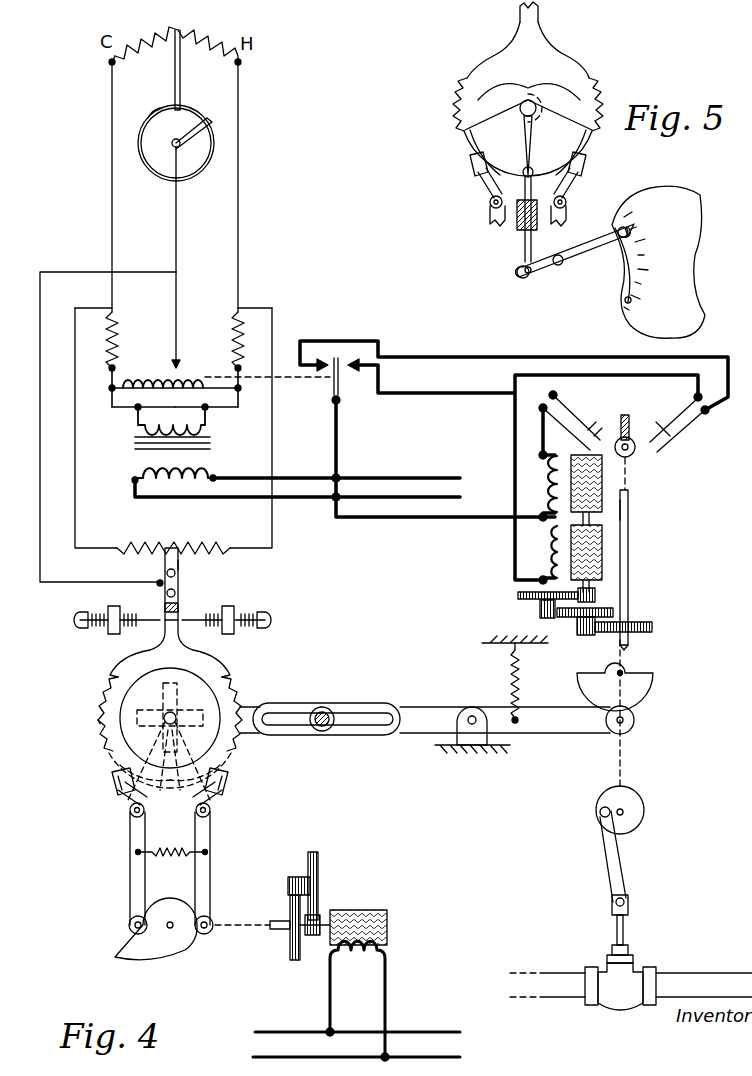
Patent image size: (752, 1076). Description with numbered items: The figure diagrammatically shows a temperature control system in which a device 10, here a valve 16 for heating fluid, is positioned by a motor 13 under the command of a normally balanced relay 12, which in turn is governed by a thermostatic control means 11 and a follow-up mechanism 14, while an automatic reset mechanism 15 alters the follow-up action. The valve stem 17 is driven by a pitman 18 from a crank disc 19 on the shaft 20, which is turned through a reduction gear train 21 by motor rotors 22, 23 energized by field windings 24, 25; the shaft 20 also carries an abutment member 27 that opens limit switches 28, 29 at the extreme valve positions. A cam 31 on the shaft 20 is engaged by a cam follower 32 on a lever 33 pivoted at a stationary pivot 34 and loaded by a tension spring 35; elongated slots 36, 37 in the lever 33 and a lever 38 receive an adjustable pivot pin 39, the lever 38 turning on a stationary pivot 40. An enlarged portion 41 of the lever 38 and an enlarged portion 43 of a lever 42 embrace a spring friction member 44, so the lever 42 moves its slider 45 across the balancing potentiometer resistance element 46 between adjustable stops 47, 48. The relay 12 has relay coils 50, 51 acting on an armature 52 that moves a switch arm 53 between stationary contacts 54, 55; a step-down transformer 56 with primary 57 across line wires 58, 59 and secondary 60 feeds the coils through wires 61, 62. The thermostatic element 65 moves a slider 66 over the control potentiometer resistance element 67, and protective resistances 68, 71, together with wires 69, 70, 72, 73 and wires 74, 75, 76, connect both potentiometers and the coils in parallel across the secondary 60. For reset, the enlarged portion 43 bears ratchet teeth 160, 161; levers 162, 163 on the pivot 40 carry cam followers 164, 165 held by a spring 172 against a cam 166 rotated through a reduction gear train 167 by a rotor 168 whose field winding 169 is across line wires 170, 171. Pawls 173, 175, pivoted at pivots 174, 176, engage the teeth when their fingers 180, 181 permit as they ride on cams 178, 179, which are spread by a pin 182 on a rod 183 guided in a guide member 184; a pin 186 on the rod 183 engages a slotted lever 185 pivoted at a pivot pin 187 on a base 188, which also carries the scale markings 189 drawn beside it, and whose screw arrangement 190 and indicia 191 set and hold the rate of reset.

In FIG. 4, the device to be positioned 10 is at (645, 955).
In FIG. 4, the control means 11 is at (248, 105).
In FIG. 4, the normally balanced relay 12 is at (290, 323).
In FIG. 4, the motor 13 is at (642, 524).
In FIG. 4, the follow-up mechanism 14 is at (225, 569).
In FIG. 4, the automatic reset mechanism 15 is at (75, 728).
In FIG. 4, the valve 16 is at (615, 975).
In FIG. 4, the valve stem 17 is at (616, 926).
In FIG. 4, the pitman 18 is at (610, 865).
In FIG. 4, the crank disc 19 is at (645, 808).
In FIG. 4, the shaft 20 is at (630, 579).
In FIG. 4, the reduction gear train 21 is at (585, 636).
In FIG. 4, the motor rotor 22 is at (605, 558).
In FIG. 4, the motor rotor 23 is at (605, 475).
In FIG. 4, the field winding 24 is at (550, 565).
In FIG. 4, the field winding 25 is at (550, 495).
In FIG. 4, the abutment member 27 is at (632, 420).
In FIG. 4, the limit switch 28 is at (586, 436).
In FIG. 4, the limit switch 29 is at (672, 444).
In FIG. 4, the cam 31 is at (652, 680).
In FIG. 4, the cam follower 32 is at (635, 720).
In FIG. 4, the lever 33 is at (555, 736).
In FIG. 4, the stationary pivot 34 is at (468, 710).
In FIG. 4, the tension spring 35 is at (520, 672).
In FIG. 4, the elongated slot 36 is at (375, 703).
In FIG. 4, the elongated slot 37 is at (290, 727).
In FIG. 4, the lever 38 is at (262, 703).
In FIG. 4, the pivot pin 39 is at (325, 706).
In FIG. 4, the stationary pivot 40 is at (178, 712).
In FIG. 5, the stationary pivot 40 is at (533, 98).
In FIG. 4, the enlarged portion 41 is at (212, 660).
In FIG. 4, the lever 42 is at (163, 632).
In FIG. 5, the lever 42 is at (518, 22).
In FIG. 4, the enlarged portion 43 is at (120, 658).
In FIG. 5, the enlarged portion 43 is at (488, 52).
In FIG. 4, the spring friction member 44 is at (100, 684).
In FIG. 4, the slider 45 is at (163, 562).
In FIG. 4, the balancing potentiometer resistance element 46 is at (185, 545).
In FIG. 4, the adjustable stop 47 is at (128, 615).
In FIG. 4, the adjustable stop 48 is at (214, 612).
In FIG. 4, the relay coil 50 is at (138, 368).
In FIG. 4, the relay coil 51 is at (190, 368).
In FIG. 4, the armature 52 is at (180, 388).
In FIG. 4, the switch arm 53 is at (333, 402).
In FIG. 4, the stationary contact 54 is at (314, 378).
In FIG. 4, the stationary contact 55 is at (350, 372).
In FIG. 4, the step-down transformer 56 is at (130, 443).
In FIG. 4, the primary 57 is at (178, 478).
In FIG. 4, the line wire 58 is at (297, 475).
In FIG. 4, the line wire 59 is at (300, 499).
In FIG. 4, the secondary 60 is at (166, 412).
In FIG. 4, the wire 61 is at (112, 408).
In FIG. 4, the wire 62 is at (225, 410).
In FIG. 4, the thermostatic element 65 is at (160, 175).
In FIG. 4, the slider 66 is at (182, 85).
In FIG. 4, the control potentiometer resistance element 67 is at (160, 46).
In FIG. 4, the protective resistance 68 is at (116, 322).
In FIG. 4, the wire 69 is at (114, 233).
In FIG. 4, the wire 70 is at (78, 520).
In FIG. 4, the protective resistance 71 is at (234, 326).
In FIG. 4, the wire 72 is at (240, 227).
In FIG. 4, the wire 73 is at (270, 457).
In FIG. 4, the wire 74 is at (178, 302).
In FIG. 4, the wire 75 is at (178, 226).
In FIG. 4, the wire 76 is at (42, 470).
In FIG. 4, the ratchet teeth 160 is at (100, 706).
In FIG. 5, the ratchet teeth 160 is at (456, 84).
In FIG. 4, the ratchet teeth 161 is at (245, 700).
In FIG. 5, the ratchet teeth 161 is at (604, 86).
In FIG. 4, the lever 162 is at (130, 838).
In FIG. 5, the lever 162 is at (490, 218).
In FIG. 4, the lever 163 is at (212, 830).
In FIG. 5, the lever 163 is at (566, 214).
In FIG. 4, the cam follower 164 is at (128, 926).
In FIG. 4, the cam follower 165 is at (214, 920).
In FIG. 4, the cam 166 is at (175, 955).
In FIG. 4, the reduction gear train 167 is at (290, 884).
In FIG. 4, the rotor 168 is at (360, 910).
In FIG. 4, the field winding 169 is at (358, 968).
In FIG. 4, the line wire 170 is at (425, 1030).
In FIG. 4, the line wire 171 is at (420, 1056).
In FIG. 4, the spring 172 is at (172, 858).
In FIG. 4, the pawl 173 is at (120, 793).
In FIG. 5, the pawl 173 is at (478, 180).
In FIG. 4, the pivot 174 is at (130, 812).
In FIG. 5, the pivot 174 is at (489, 203).
In FIG. 4, the pawl 175 is at (222, 792).
In FIG. 5, the pawl 175 is at (578, 180).
In FIG. 4, the pivot 176 is at (210, 811).
In FIG. 5, the pivot 176 is at (567, 202).
In FIG. 4, the cam 178 is at (110, 760).
In FIG. 5, the cam 178 is at (470, 140).
In FIG. 4, the cam 179 is at (238, 753).
In FIG. 5, the cam 179 is at (596, 142).
In FIG. 4, the finger 180 is at (112, 778).
In FIG. 5, the finger 180 is at (470, 162).
In FIG. 4, the finger 181 is at (228, 776).
In FIG. 5, the finger 181 is at (586, 162).
In FIG. 5, the pin 182 is at (533, 170).
In FIG. 5, the rod 183 is at (524, 248).
In FIG. 5, the guide member 184 is at (517, 228).
In FIG. 5, the lever 185 is at (585, 258).
In FIG. 5, the pin 186 is at (520, 280).
In FIG. 5, the pivot pin 187 is at (558, 268).
In FIG. 5, the base 188 is at (620, 300).
In FIG. 5, the scale graduations 189 is at (630, 312).
In FIG. 5, the screw arrangement 190 is at (632, 222).
In FIG. 5, the indicia 191 is at (668, 268).